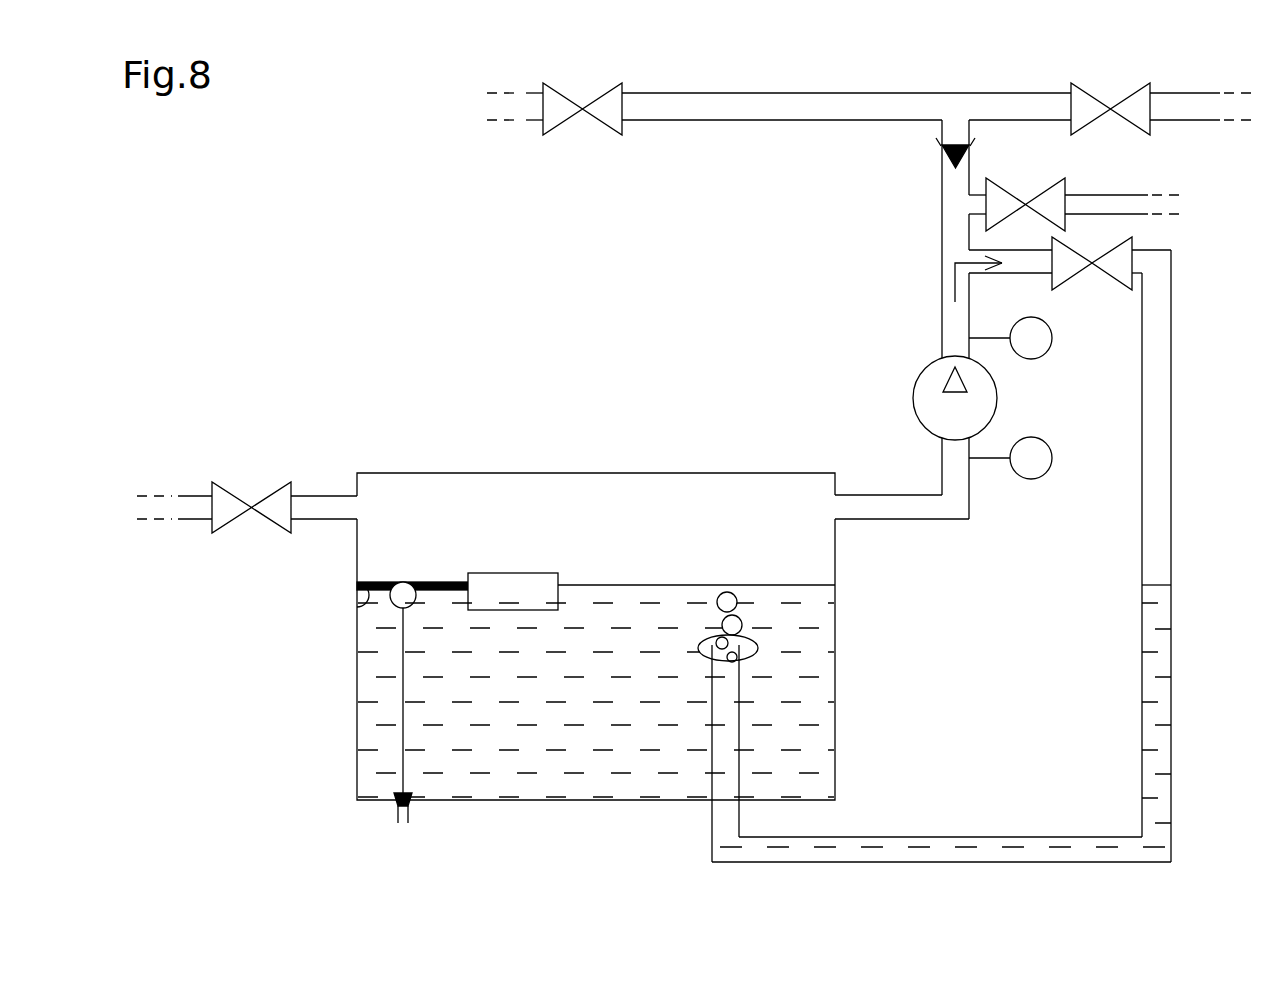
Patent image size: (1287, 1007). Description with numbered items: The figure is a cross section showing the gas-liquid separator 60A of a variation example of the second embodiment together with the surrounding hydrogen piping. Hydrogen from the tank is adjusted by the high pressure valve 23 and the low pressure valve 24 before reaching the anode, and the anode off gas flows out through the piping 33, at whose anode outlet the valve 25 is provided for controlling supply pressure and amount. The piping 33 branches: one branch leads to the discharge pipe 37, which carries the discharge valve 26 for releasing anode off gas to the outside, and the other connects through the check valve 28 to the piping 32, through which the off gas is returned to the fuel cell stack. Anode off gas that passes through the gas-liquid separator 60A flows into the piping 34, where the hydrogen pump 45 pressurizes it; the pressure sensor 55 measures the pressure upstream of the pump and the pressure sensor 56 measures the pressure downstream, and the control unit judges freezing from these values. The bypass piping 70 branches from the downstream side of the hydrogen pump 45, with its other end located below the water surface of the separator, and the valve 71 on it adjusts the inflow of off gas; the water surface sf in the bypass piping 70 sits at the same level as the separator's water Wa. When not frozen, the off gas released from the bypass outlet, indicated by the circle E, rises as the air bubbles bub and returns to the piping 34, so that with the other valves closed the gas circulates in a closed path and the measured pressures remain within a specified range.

The high pressure valve 23 is at (1150, 128).
The low pressure valve 24 is at (600, 125).
The valve 25 is at (265, 497).
The discharge valve 26 is at (1000, 180).
The check valve 28 is at (973, 146).
The piping 32 is at (828, 120).
The piping 33 is at (325, 495).
The piping 34 is at (971, 497).
The discharge pipe 37 is at (1095, 195).
The hydrogen pump 45 is at (913, 396).
The pressure sensor 55 is at (1050, 445).
The pressure sensor 56 is at (1047, 352).
The gas-liquid separator 60A is at (411, 466).
The bypass piping 70 is at (1172, 770).
The valve 71 is at (1105, 276).
The air bubbles bub is at (740, 600).
The circle E is at (758, 648).
The water Wa is at (800, 673).
The water surface sf is at (1157, 585).